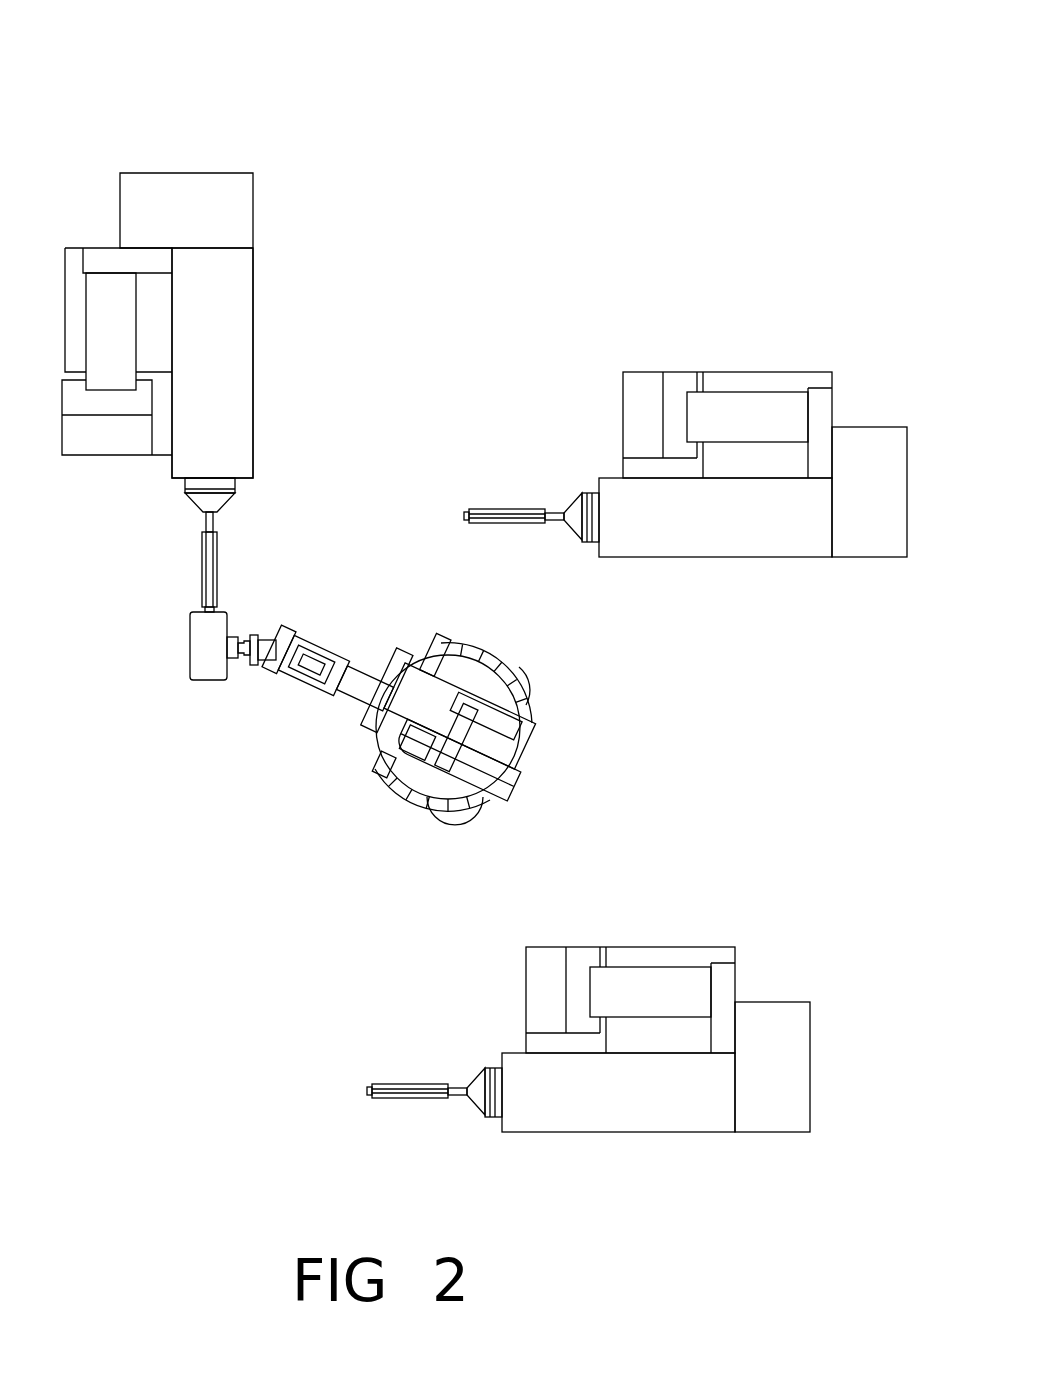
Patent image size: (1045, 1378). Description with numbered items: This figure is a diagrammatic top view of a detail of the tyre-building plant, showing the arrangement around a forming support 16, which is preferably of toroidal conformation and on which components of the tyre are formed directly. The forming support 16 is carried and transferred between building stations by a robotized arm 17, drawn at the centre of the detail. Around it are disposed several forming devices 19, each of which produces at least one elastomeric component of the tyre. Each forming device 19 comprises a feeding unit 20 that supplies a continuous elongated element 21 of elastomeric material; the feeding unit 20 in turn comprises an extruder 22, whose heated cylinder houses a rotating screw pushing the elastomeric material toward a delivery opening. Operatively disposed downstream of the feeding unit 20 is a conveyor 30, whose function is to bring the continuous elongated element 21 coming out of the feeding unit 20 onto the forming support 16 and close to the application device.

The forming support 16 is at (199, 667).
The robotized arm 17 is at (527, 670).
The forming device 19 is at (120, 137).
The feeding unit 20 is at (273, 205).
The continuous elongated element 21 is at (215, 570).
The extruder 22 is at (230, 318).
The conveyor 30 is at (200, 582).